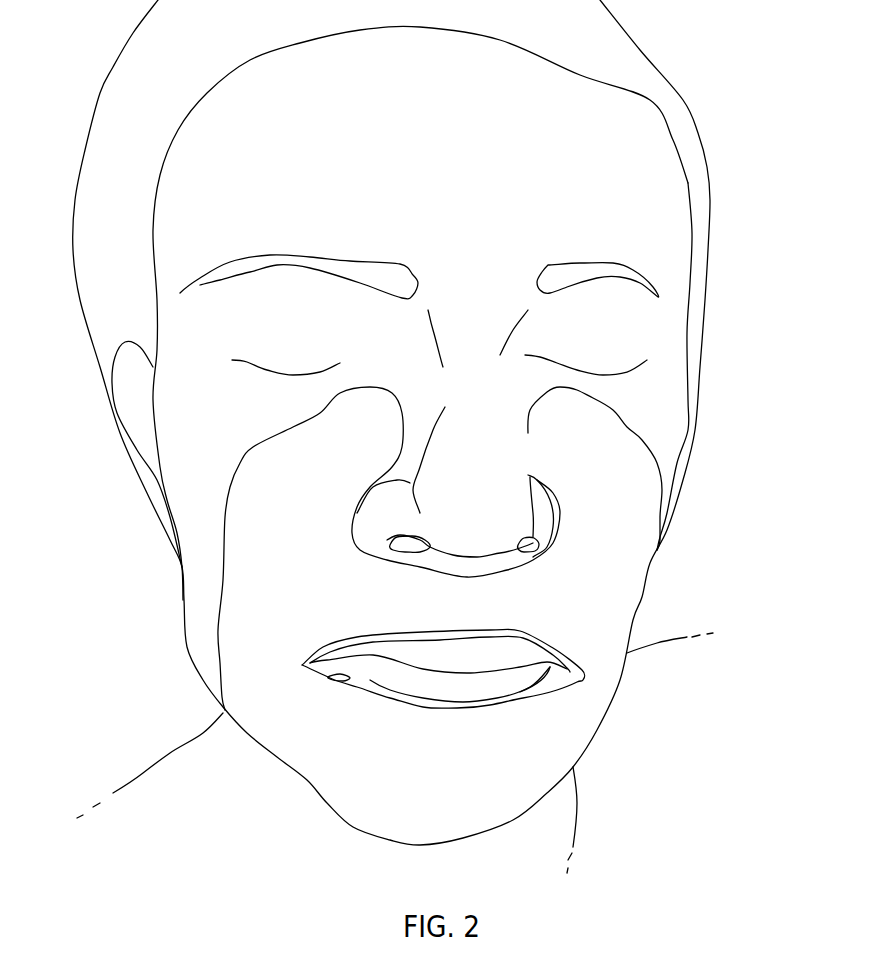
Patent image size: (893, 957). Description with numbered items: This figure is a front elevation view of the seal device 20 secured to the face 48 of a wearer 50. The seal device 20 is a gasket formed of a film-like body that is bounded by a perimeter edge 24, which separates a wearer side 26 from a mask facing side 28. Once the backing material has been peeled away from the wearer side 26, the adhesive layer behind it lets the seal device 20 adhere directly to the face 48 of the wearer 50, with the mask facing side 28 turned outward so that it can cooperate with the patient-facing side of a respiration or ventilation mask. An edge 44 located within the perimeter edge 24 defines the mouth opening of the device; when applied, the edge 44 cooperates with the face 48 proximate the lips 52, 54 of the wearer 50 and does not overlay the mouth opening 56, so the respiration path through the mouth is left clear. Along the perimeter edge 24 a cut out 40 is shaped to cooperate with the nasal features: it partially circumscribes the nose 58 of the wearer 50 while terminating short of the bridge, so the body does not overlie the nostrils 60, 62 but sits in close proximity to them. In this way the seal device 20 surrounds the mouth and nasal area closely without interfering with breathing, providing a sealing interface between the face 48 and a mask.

The seal device 20 is at (252, 403).
The perimeter edge 24 is at (643, 440).
The wearer side 26 is at (637, 398).
The mask facing side 28 is at (643, 542).
The cut out 40 is at (410, 433).
The edge 44 is at (345, 675).
The face 48 is at (667, 263).
The wearer 50 is at (640, 210).
The lip 52 is at (458, 685).
The lip 54 is at (463, 660).
The mouth opening 56 is at (513, 668).
The nose 58 is at (475, 482).
The nostril 60 is at (406, 543).
The nostril 62 is at (527, 550).